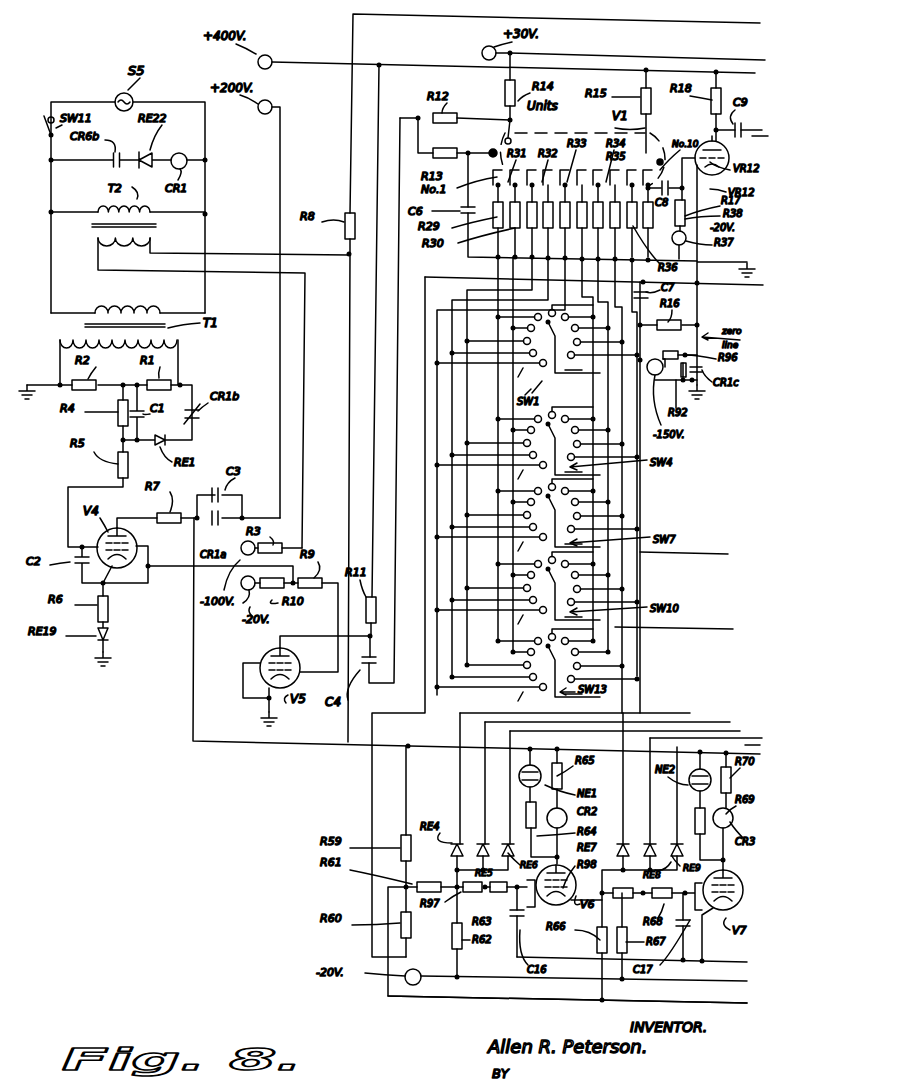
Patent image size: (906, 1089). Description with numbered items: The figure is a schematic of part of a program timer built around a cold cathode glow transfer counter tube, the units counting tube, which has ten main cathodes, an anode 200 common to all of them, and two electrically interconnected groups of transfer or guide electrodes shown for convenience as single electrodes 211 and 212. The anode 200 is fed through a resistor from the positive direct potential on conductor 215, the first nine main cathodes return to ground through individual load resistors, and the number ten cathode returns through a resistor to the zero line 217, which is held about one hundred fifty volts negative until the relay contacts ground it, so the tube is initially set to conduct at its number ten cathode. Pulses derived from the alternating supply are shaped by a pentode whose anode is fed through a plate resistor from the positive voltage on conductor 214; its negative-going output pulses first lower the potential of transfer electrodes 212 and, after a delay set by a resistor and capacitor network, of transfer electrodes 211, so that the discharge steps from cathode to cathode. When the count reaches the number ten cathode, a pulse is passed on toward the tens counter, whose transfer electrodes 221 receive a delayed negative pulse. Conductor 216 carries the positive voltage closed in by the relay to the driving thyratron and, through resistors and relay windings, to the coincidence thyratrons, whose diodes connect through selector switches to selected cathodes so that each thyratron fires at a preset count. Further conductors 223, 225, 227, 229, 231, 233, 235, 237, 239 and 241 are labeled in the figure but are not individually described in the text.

The anode 200 is at (650, 150).
The transfer or guide electrodes 211 is at (489, 151).
The transfer or guide electrodes 212 is at (504, 135).
The conductor 214 is at (610, 58).
The conductor 215 is at (421, 65).
The conductor 216 is at (236, 744).
The zero line 217 is at (697, 302).
The transfer electrodes 221 is at (380, 17).
The switch output conductor 223 is at (691, 551).
The switch output conductor 225 is at (693, 626).
The conductor 227 is at (693, 707).
The conductor 229 is at (705, 720).
The conductor 231 is at (737, 728).
The conductor 233 is at (694, 726).
The conductor 235 is at (756, 745).
The conductor 237 is at (745, 956).
The -20 volt conductor 239 is at (735, 980).
The conductor 241 is at (730, 1002).